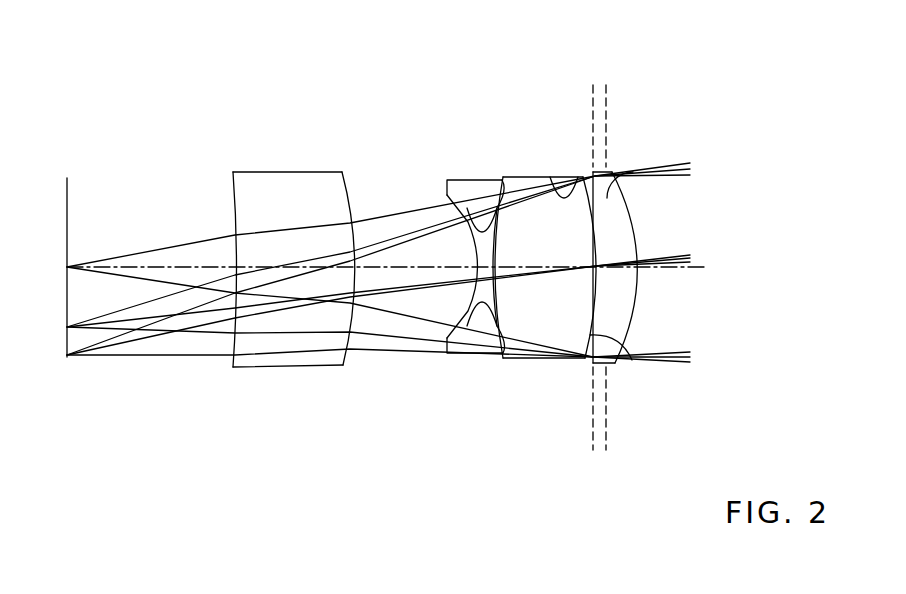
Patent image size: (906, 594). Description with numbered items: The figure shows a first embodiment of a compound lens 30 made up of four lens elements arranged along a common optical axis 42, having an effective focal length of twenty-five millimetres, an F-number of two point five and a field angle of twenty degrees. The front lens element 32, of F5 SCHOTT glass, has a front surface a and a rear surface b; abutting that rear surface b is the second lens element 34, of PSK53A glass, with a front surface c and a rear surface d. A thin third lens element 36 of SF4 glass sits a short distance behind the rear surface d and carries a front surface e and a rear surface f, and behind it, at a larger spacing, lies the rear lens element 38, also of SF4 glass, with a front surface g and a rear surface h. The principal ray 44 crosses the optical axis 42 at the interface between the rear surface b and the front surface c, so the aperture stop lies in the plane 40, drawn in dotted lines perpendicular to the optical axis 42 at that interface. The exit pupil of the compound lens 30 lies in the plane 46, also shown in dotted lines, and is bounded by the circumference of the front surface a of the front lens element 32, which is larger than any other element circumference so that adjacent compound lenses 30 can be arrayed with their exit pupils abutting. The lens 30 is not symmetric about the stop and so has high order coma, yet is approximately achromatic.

The compound lens 30 is at (384, 118).
The front lens element 32 is at (667, 250).
The second lens element 34 is at (543, 288).
The third lens element 36 is at (451, 288).
The rear lens element 38 is at (279, 285).
The aperture stop plane 40 is at (605, 250).
The optical axis 42 is at (705, 267).
The principal ray 44 is at (153, 352).
The exit pupil plane 46 is at (607, 413).
The front surface of front lens element a is at (633, 308).
The rear surface of front lens element b is at (633, 365).
The front surface of second lens element c is at (548, 177).
The rear surface of second lens element d is at (517, 175).
The front surface of third lens element e is at (467, 178).
The rear surface of third lens element f is at (447, 313).
The front surface of rear lens element g is at (347, 190).
The rear surface of rear lens element h is at (230, 188).